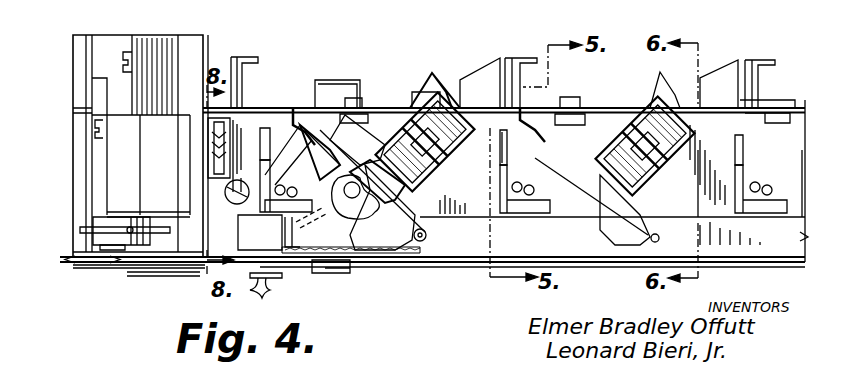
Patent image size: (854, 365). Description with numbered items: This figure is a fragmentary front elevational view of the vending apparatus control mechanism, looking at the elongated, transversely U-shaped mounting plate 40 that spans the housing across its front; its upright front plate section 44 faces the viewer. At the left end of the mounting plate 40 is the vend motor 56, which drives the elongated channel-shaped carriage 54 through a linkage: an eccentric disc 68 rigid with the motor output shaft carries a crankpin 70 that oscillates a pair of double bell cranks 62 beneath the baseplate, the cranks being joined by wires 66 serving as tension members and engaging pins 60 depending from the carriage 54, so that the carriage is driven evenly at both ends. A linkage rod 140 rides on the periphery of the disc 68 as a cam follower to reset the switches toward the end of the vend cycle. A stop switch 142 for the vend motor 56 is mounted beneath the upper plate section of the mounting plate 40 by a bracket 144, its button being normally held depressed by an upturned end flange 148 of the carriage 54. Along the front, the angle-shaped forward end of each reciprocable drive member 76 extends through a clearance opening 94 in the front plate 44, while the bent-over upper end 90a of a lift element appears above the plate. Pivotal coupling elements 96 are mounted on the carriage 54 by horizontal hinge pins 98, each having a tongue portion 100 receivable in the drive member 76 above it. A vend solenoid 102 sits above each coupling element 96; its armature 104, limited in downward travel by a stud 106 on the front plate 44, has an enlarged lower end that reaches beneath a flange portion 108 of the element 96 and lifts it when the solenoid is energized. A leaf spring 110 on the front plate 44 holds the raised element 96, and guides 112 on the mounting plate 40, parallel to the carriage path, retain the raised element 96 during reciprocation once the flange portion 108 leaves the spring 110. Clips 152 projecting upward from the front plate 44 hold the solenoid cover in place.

The mounting plate 40 is at (596, 106).
The front plate section 44 is at (760, 106).
The carriage 54 is at (534, 196).
The vend motor 56 is at (115, 152).
The pins 60 is at (338, 274).
The double bell cranks 62 is at (172, 277).
The wires 66 is at (267, 294).
The eccentric disc 68 is at (118, 221).
The crankpin 70 is at (95, 247).
The drive member 76 is at (278, 213).
The bent-over upper end of lift element 90a is at (519, 62).
The clearance opening 94 is at (276, 152).
The coupling element 96 is at (403, 206).
The hinge pin 98 is at (428, 238).
The tongue portion 100 is at (300, 268).
The vend solenoid 102 is at (405, 95).
The armature 104 is at (377, 203).
The stud 106 is at (353, 211).
The flange portion 108 is at (305, 160).
The leaf spring 110 is at (297, 109).
The guides 112 is at (345, 108).
The linkage rod 140 is at (95, 224).
The stop switch 142 is at (208, 151).
The bracket 144 is at (208, 122).
The upturned end flange 148 is at (222, 186).
The clips 152 is at (330, 80).